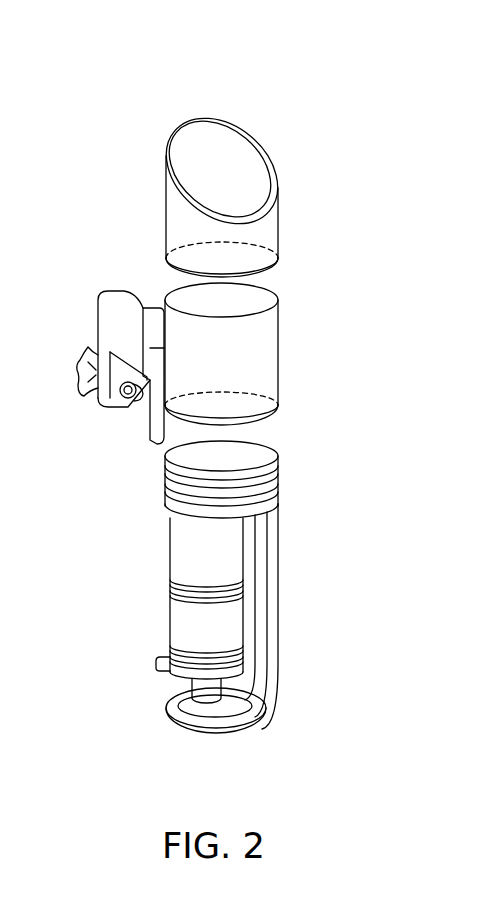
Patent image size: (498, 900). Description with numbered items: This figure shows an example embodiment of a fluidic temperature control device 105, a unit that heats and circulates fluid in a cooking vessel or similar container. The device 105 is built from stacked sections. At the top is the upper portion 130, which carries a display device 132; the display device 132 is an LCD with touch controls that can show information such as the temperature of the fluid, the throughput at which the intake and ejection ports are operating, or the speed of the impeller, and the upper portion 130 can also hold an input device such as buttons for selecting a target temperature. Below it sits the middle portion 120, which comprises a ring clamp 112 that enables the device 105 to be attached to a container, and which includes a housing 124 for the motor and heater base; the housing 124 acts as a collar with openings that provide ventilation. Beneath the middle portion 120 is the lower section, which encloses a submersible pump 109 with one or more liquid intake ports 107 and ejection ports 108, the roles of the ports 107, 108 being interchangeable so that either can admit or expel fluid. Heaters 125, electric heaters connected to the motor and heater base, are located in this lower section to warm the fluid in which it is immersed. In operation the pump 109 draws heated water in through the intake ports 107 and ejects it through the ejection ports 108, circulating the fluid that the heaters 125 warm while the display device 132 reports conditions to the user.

The fluidic temperature control device 105 is at (148, 58).
The liquid intake port 107 is at (157, 663).
The ejection port 108 is at (197, 697).
The submersible pump 109 is at (182, 614).
The ring clamp 112 is at (97, 313).
The middle portion 120 is at (268, 354).
The housing 124 is at (276, 484).
The heaters 125 is at (168, 707).
The upper portion 130 is at (174, 216).
The display device 132 is at (232, 143).